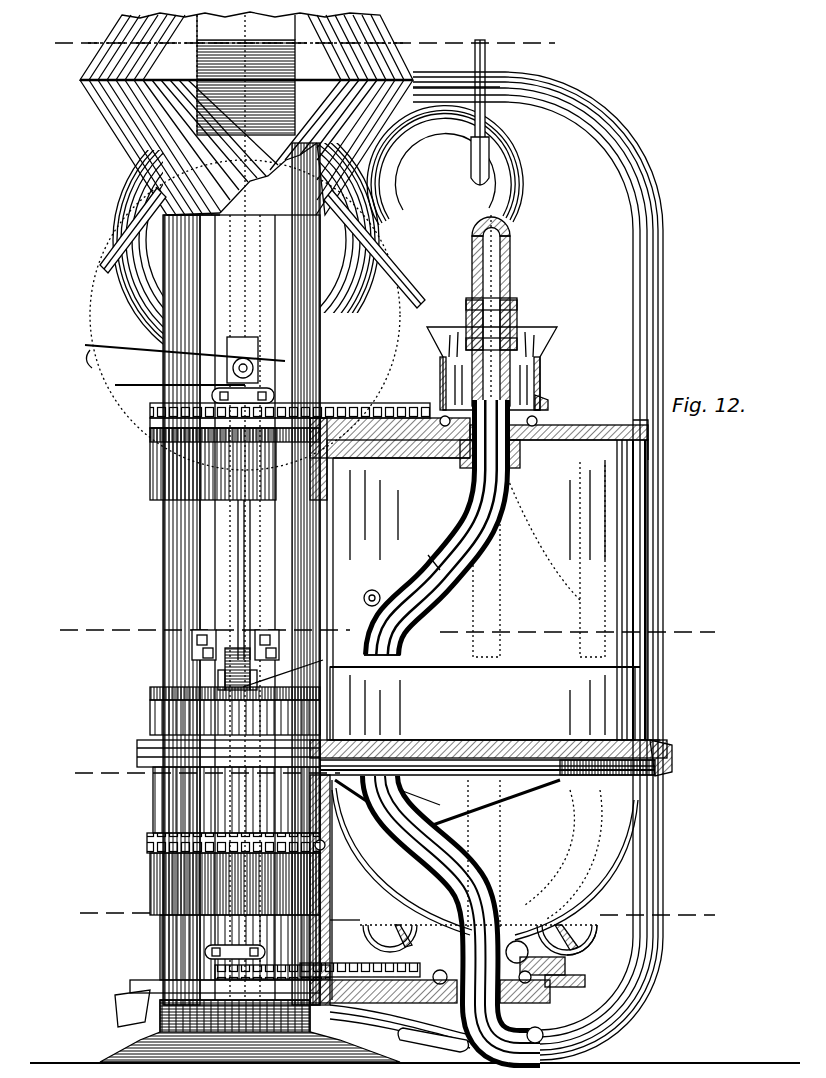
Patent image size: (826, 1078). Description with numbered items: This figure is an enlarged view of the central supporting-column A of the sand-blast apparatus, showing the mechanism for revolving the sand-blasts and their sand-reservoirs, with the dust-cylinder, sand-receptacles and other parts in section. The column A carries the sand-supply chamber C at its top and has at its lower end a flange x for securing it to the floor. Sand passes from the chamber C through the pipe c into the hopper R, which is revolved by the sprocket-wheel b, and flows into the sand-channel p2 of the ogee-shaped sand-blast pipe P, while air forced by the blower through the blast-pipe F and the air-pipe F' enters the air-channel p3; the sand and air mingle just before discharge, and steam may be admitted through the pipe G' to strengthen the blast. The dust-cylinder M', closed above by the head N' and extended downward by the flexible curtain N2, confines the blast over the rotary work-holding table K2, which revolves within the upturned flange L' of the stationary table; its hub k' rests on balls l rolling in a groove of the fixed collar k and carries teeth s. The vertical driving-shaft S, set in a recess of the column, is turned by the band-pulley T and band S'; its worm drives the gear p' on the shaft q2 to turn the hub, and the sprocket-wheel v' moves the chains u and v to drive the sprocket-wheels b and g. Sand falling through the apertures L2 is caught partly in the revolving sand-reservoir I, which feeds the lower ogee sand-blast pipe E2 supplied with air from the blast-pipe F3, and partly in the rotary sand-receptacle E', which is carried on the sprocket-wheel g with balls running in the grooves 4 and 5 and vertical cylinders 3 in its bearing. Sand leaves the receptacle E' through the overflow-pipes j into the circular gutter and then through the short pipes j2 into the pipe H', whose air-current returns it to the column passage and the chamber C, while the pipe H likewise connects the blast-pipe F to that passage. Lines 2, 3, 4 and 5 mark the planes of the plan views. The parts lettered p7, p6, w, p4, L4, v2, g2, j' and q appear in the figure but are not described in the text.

The vertical column A is at (190, 558).
The sand-supply chamber C is at (86, 240).
The sand pipe c is at (400, 283).
The section line y is at (380, 194).
The blast-pipe F is at (450, 165).
The steam-blast pipe G' is at (495, 112).
The blast-pipe F3 is at (553, 566).
The air-pipe F' is at (491, 342).
The tube flange p7 is at (506, 305).
The tube flange p6 is at (516, 344).
The hopper R is at (541, 365).
The sprocket-wheel b is at (546, 400).
The chain band w is at (290, 405).
The head N' is at (479, 449).
The circular groove 4 is at (545, 417).
The vertical cylinders 3 is at (468, 468).
The dust-cylinder M' is at (487, 590).
The flexible curtain N2 is at (485, 703).
The sand-blast pipe P is at (450, 565).
The sand-channel p2 is at (428, 555).
The air-channel p3 is at (418, 585).
The pipe end p4 is at (398, 648).
The section line 2 is at (385, 632).
The upturned flange L' is at (508, 758).
The tube L4 is at (657, 776).
The work-holding table K2 is at (655, 742).
The apertures L2 is at (463, 806).
The fixed collar k is at (330, 890).
The metallic balls l is at (326, 900).
The central hub k' is at (345, 932).
The sprocket-wheel v' is at (360, 966).
The sand-reservoir I is at (460, 912).
The drive-chain v is at (424, 808).
The lower sand-blast pipe E2 is at (455, 850).
The valve stem v2 is at (474, 868).
The rotary sand-receptacle E' is at (576, 865).
The overflow-pipes j is at (480, 940).
The ball g2 is at (518, 940).
The sprocket-wheel g is at (560, 968).
The bolt j' is at (482, 964).
The circular groove 5 is at (304, 494).
The flange x is at (329, 1021).
The pipe H' is at (400, 1028).
The short pipes j2 is at (450, 1030).
The teeth s is at (150, 690).
The band-pulley T is at (252, 355).
The band S' is at (181, 365).
The driving-shaft S is at (195, 580).
The guide blocks q is at (220, 632).
The gear p' is at (198, 669).
The shaft q2 is at (288, 672).
The pipe H is at (214, 994).
The sprocket chain u is at (267, 974).